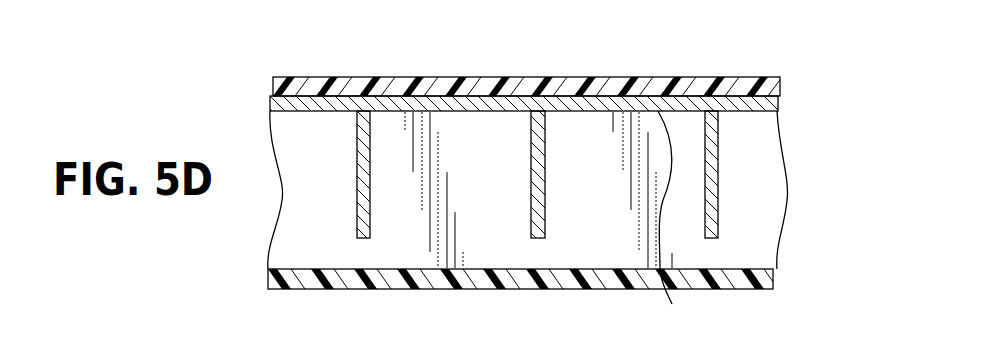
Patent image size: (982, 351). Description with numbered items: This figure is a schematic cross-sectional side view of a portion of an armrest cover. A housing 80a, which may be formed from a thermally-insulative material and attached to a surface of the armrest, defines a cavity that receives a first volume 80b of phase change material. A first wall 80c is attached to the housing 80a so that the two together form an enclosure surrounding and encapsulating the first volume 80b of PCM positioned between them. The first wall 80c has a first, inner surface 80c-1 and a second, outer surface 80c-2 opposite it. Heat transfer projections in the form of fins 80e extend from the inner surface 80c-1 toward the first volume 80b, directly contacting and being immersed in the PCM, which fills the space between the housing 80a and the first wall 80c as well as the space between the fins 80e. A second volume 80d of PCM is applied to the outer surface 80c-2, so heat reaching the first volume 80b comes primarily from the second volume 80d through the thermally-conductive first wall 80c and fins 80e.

The housing 80a is at (448, 278).
The first volume of PCM 80b is at (757, 182).
The first wall 80c is at (671, 90).
The first (inner) surface 80c-1 is at (686, 222).
The second (outer) surface 80c-2 is at (503, 88).
The second volume of PCM 80d is at (341, 88).
The fins 80e is at (370, 185).